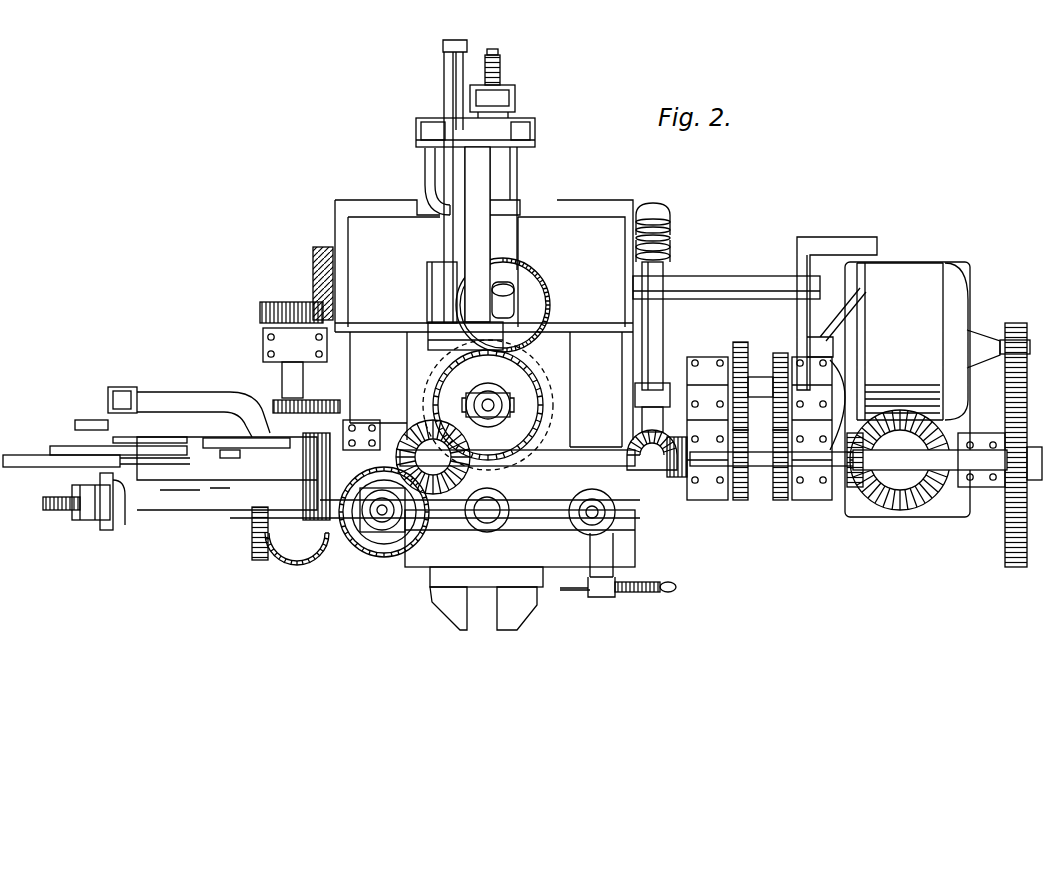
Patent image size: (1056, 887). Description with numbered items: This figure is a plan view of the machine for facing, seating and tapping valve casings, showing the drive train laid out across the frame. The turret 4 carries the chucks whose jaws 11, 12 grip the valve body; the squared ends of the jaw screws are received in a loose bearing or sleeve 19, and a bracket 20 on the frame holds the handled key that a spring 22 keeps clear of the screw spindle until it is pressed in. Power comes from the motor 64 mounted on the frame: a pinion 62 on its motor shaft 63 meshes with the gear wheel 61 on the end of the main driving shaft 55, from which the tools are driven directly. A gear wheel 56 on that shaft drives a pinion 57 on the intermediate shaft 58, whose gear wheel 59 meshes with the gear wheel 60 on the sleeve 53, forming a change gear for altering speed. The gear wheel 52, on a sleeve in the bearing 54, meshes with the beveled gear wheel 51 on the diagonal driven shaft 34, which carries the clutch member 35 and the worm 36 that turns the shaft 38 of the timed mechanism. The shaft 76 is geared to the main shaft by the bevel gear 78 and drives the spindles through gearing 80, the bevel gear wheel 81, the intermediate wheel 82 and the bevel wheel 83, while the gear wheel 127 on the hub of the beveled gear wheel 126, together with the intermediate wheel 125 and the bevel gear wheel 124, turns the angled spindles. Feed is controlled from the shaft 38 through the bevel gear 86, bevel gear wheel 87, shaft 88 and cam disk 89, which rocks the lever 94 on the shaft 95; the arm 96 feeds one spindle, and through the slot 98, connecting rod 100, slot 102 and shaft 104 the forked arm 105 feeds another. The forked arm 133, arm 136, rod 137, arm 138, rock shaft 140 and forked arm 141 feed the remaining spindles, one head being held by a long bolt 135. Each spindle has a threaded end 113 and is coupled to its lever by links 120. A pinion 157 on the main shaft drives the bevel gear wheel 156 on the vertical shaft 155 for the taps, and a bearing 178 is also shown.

The turret 4 is at (520, 548).
The jaw 11 is at (459, 626).
The jaw 12 is at (512, 622).
The loose bearing or sleeve 19 is at (470, 512).
The bracket 20 is at (610, 566).
The spring 22 is at (635, 592).
The driven shaft 34 is at (662, 346).
The clutch member 35 is at (669, 258).
The worm 36 is at (671, 234).
The shaft 38 is at (716, 284).
The beveled gear wheel 51 is at (645, 474).
The gear wheel 52 is at (676, 478).
The sleeve 53 is at (707, 428).
The bearing 54 is at (712, 500).
The main driving shaft 55 is at (600, 450).
The gear wheel 56 is at (780, 500).
The pinion 57 is at (782, 353).
The intermediate shaft 58 is at (762, 377).
The gear wheel 59 is at (740, 342).
The gear wheel 60 is at (741, 500).
The gear wheel 61 is at (1031, 440).
The pinion 62 is at (1020, 323).
The motor shaft 63 is at (1028, 350).
The motor 64 is at (922, 389).
The shaft 76 is at (517, 458).
The bevel gear 78 is at (404, 432).
The gearing 80 is at (389, 560).
The bevel gear wheel 81 is at (370, 560).
The intermediate wheel 82 is at (298, 560).
The bevel wheel 83 is at (260, 560).
The bevel gear 86 is at (316, 273).
The bevel gear wheel 87 is at (284, 308).
The shaft 88 is at (283, 380).
The cam disk 89 is at (318, 400).
The lever 94 is at (92, 420).
The shaft 95 is at (128, 387).
The arm 96 is at (114, 527).
The slot 98 is at (22, 461).
The connecting rod 100 is at (118, 443).
The slot 102 is at (258, 448).
The shaft 104 is at (318, 468).
The forked arm 105 is at (364, 502).
The threaded end 113 is at (55, 510).
The links 120 is at (88, 520).
The bevel gear wheel 124 is at (538, 278).
The intermediate wheel 125 is at (544, 302).
The beveled gear wheel 126 is at (532, 370).
The gear wheel 127 is at (534, 392).
The forked arm 133 is at (518, 110).
The long bolt 135 is at (502, 62).
The arm 136 is at (470, 68).
The rod 137 is at (448, 78).
The arm 138 is at (428, 293).
The rock shaft 140 is at (428, 340).
The forked arm 141 is at (468, 386).
The vertical shaft 155 is at (900, 460).
The bevel gear wheel 156 is at (903, 510).
The pinion 157 is at (851, 490).
The bearing 178 is at (614, 518).